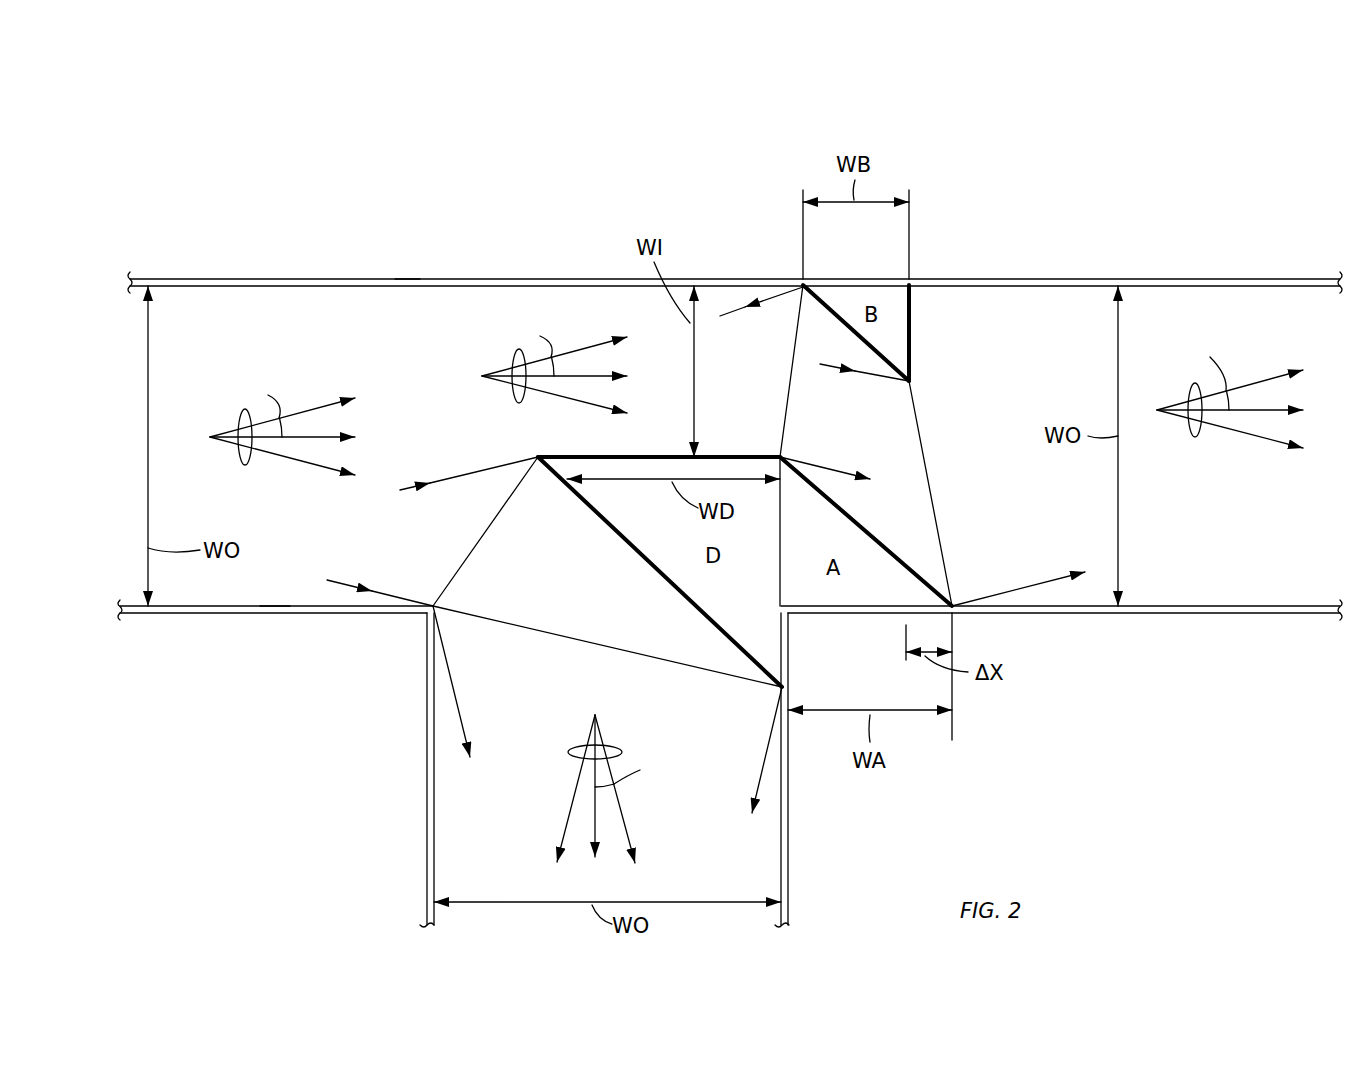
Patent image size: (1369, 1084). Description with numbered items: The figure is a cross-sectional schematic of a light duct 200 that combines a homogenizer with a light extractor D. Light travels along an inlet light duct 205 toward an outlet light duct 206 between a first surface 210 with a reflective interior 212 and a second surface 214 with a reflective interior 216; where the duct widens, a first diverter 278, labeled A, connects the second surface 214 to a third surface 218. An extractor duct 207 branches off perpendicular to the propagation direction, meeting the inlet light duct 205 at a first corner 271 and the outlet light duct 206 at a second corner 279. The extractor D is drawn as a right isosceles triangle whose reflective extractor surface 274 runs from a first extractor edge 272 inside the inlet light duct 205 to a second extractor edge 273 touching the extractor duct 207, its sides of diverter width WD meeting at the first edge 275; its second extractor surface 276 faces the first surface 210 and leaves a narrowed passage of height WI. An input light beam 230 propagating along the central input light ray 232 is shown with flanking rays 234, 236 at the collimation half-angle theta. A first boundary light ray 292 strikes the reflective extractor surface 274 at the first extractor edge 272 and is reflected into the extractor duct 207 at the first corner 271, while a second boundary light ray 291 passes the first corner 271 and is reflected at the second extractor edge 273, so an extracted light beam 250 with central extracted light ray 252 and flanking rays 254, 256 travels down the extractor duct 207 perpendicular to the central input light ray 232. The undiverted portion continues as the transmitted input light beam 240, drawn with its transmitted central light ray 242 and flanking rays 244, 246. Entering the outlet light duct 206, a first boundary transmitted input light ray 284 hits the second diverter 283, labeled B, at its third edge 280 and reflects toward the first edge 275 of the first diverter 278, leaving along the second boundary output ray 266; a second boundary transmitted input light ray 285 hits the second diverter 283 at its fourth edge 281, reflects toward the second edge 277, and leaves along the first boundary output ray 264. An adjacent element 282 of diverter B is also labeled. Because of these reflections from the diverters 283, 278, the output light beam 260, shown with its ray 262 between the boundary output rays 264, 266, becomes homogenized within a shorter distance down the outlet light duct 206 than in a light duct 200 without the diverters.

The light duct 200 is at (228, 165).
The inlet light duct 205 is at (225, 262).
The outlet light duct 206 is at (1205, 262).
The extractor duct 207 is at (410, 800).
The first surface 210 is at (300, 279).
The reflective interior 212 is at (395, 282).
The second surface 214 is at (218, 620).
The reflective interior 216 is at (278, 612).
The third surface 218 is at (1200, 620).
The input light beam 230 is at (236, 420).
The central input light ray 232 is at (325, 437).
The upper marginal ray 234 is at (308, 410).
The lower marginal ray 236 is at (292, 458).
The transmitted input light beam 240 is at (510, 360).
The transmitted central light ray 242 is at (598, 376).
The upper marginal ray 244 is at (585, 350).
The lower marginal ray 246 is at (562, 398).
The extracted light beam 250 is at (610, 745).
The central extracted light ray 252 is at (600, 832).
The marginal ray 254 is at (624, 818).
The marginal ray 256 is at (572, 798).
The output light beam 260 is at (1188, 395).
The central ray 262 is at (1272, 410).
The first boundary output ray 264 is at (1256, 383).
The second boundary output ray 266 is at (1234, 428).
The first corner 271 is at (426, 618).
The first extractor edge 272 is at (536, 456).
The second extractor edge 273 is at (784, 688).
The reflective extractor surface 274 is at (628, 552).
The first edge 275 is at (778, 456).
The second extractor surface 276 is at (657, 455).
The second edge 277 is at (958, 600).
The first diverter 278 is at (877, 536).
The second corner 279 is at (790, 620).
The third edge 280 is at (802, 283).
The fourth edge 281 is at (912, 382).
The reflective surface 282 is at (910, 284).
The second diverter 283 is at (836, 308).
The first boundary transmitted input light ray 284 is at (780, 318).
The second boundary transmitted input light ray 285 is at (868, 380).
The second boundary light ray 291 is at (398, 592).
The first boundary light ray 292 is at (494, 480).